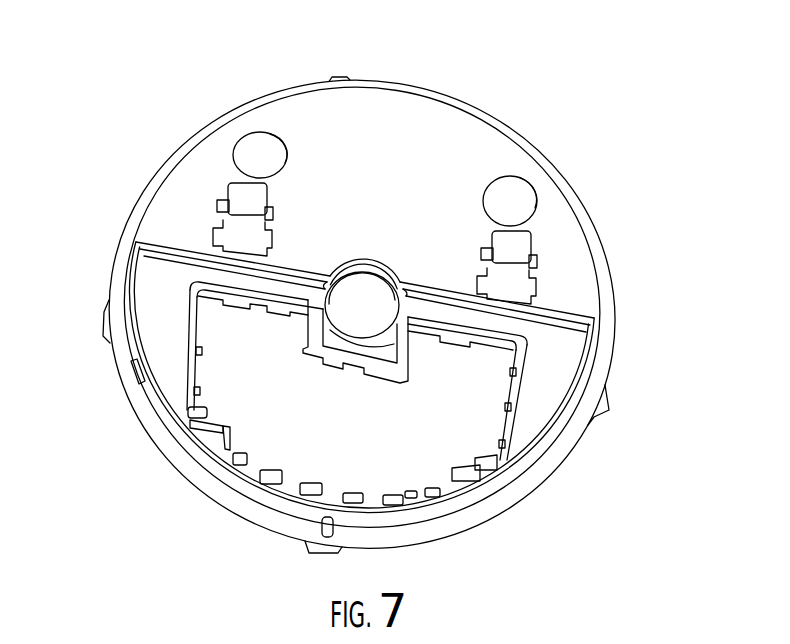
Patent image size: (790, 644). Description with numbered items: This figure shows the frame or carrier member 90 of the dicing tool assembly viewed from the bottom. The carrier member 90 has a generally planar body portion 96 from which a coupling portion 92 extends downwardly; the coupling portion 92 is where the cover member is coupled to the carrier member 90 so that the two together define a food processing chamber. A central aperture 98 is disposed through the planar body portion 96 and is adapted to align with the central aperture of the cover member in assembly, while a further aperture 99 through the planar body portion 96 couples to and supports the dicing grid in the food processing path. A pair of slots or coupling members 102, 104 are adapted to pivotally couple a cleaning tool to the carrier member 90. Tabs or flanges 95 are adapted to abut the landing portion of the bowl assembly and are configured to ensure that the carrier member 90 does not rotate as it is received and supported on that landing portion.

The carrier member 90 is at (607, 172).
The coupling portion 92 is at (588, 368).
The tabs 95 is at (460, 97).
The generally planar body portion 96 is at (383, 173).
The central aperture 98 is at (343, 311).
The aperture 99 is at (417, 438).
The coupling member 102 is at (520, 272).
The coupling member 104 is at (240, 230).